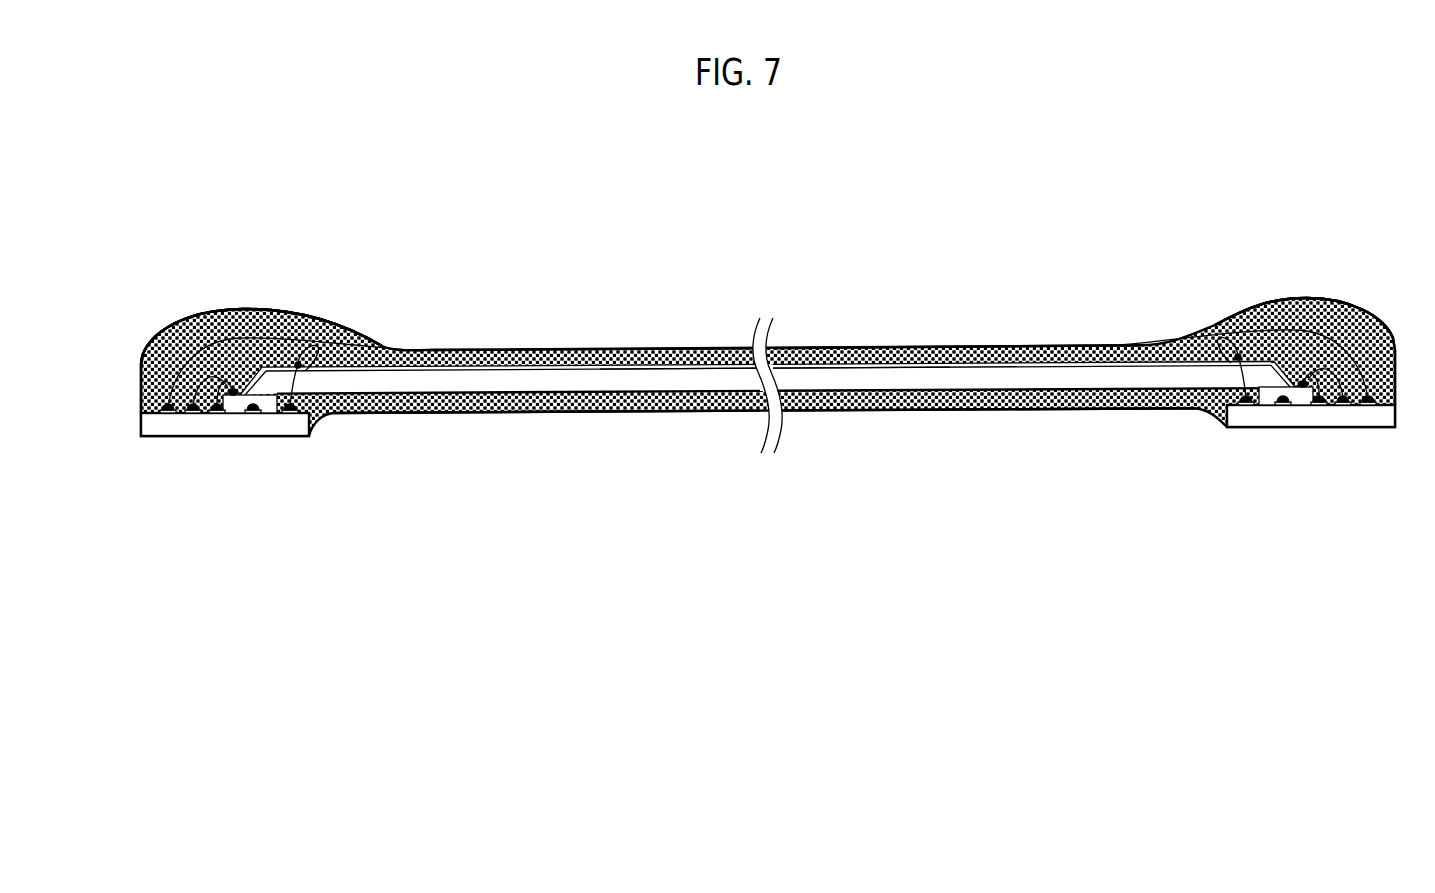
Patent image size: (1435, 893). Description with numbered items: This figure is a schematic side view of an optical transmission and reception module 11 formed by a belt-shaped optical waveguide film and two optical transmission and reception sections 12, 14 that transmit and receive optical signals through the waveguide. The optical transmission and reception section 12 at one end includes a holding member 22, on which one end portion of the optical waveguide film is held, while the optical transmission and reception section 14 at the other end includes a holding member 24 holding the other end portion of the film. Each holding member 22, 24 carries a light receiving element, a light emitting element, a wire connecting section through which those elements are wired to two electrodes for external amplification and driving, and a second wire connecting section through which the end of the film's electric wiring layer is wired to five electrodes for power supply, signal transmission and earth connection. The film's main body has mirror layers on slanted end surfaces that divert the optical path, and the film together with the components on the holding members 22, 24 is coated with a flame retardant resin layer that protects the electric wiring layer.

The optical transmission and reception module 11 is at (1008, 180).
The optical transmission and reception section 12 is at (165, 260).
The optical transmission and reception section 14 is at (1368, 214).
The holding member 22 is at (152, 428).
The holding member 24 is at (1390, 410).